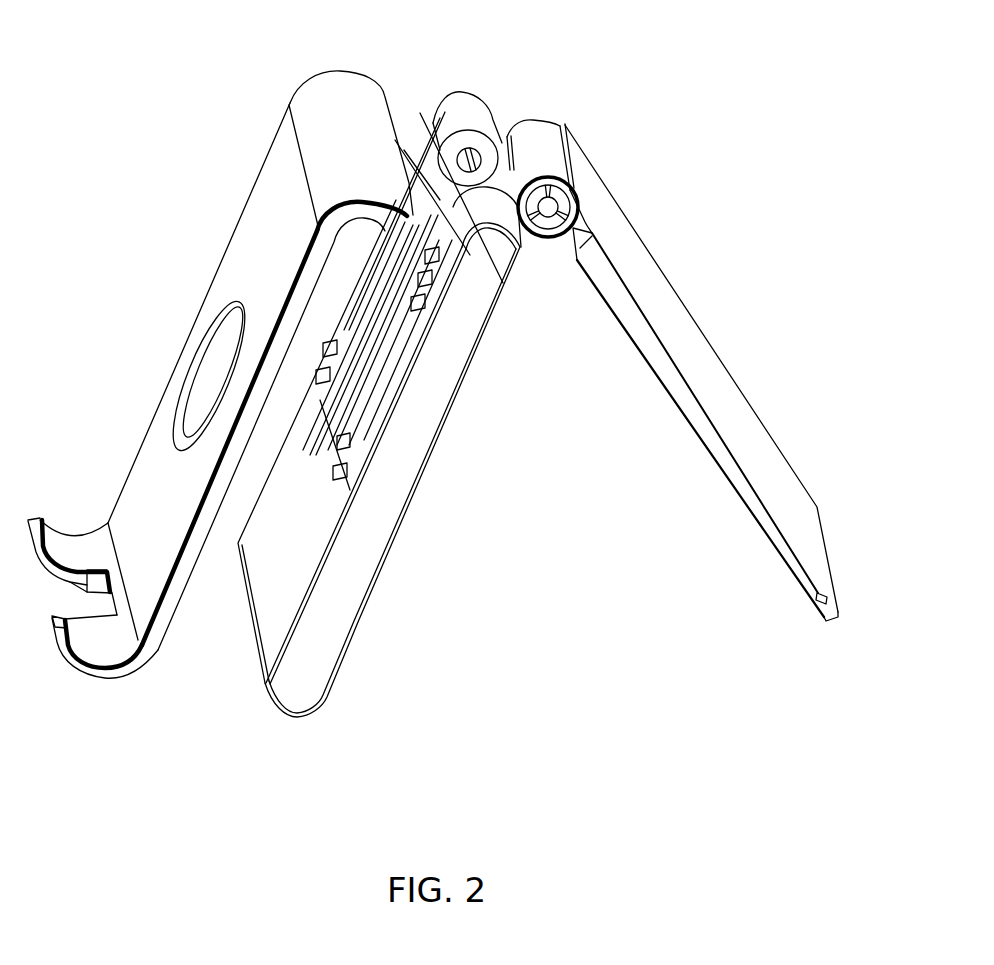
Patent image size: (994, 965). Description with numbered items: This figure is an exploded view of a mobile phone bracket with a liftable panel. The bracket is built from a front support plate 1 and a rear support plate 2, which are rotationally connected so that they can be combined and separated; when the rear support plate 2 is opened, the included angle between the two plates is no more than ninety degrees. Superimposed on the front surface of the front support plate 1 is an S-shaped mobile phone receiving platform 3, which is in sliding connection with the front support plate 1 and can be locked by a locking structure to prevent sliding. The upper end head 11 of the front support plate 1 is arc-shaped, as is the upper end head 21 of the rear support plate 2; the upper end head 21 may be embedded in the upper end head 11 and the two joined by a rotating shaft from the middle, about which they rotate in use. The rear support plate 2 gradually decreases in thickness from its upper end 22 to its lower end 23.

The front support plate 1 is at (382, 497).
The rear support plate 2 is at (665, 302).
The mobile phone receiving platform 3 is at (258, 254).
The upper end head of the front support plate 11 is at (467, 110).
The upper end head of the rear support plate 21 is at (545, 147).
The upper end of the rear support plate 22 is at (583, 283).
The lower end of the rear support plate 23 is at (817, 620).